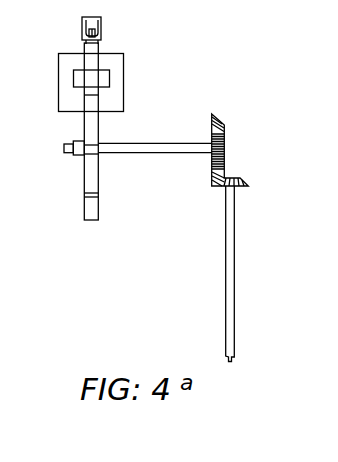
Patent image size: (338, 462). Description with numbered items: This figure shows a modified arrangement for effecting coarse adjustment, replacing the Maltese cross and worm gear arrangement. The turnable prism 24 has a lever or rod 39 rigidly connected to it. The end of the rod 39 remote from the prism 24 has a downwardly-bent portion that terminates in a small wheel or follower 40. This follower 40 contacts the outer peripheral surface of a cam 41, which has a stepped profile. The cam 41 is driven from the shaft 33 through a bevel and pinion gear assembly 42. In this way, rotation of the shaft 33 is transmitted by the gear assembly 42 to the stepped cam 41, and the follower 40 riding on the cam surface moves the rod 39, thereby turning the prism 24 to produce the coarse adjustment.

The block 24 is at (124, 88).
The rod 33 is at (232, 271).
The cap 39 is at (97, 22).
The pin 40 is at (95, 33).
The slide bar 41 is at (90, 182).
The rack 42 is at (226, 174).